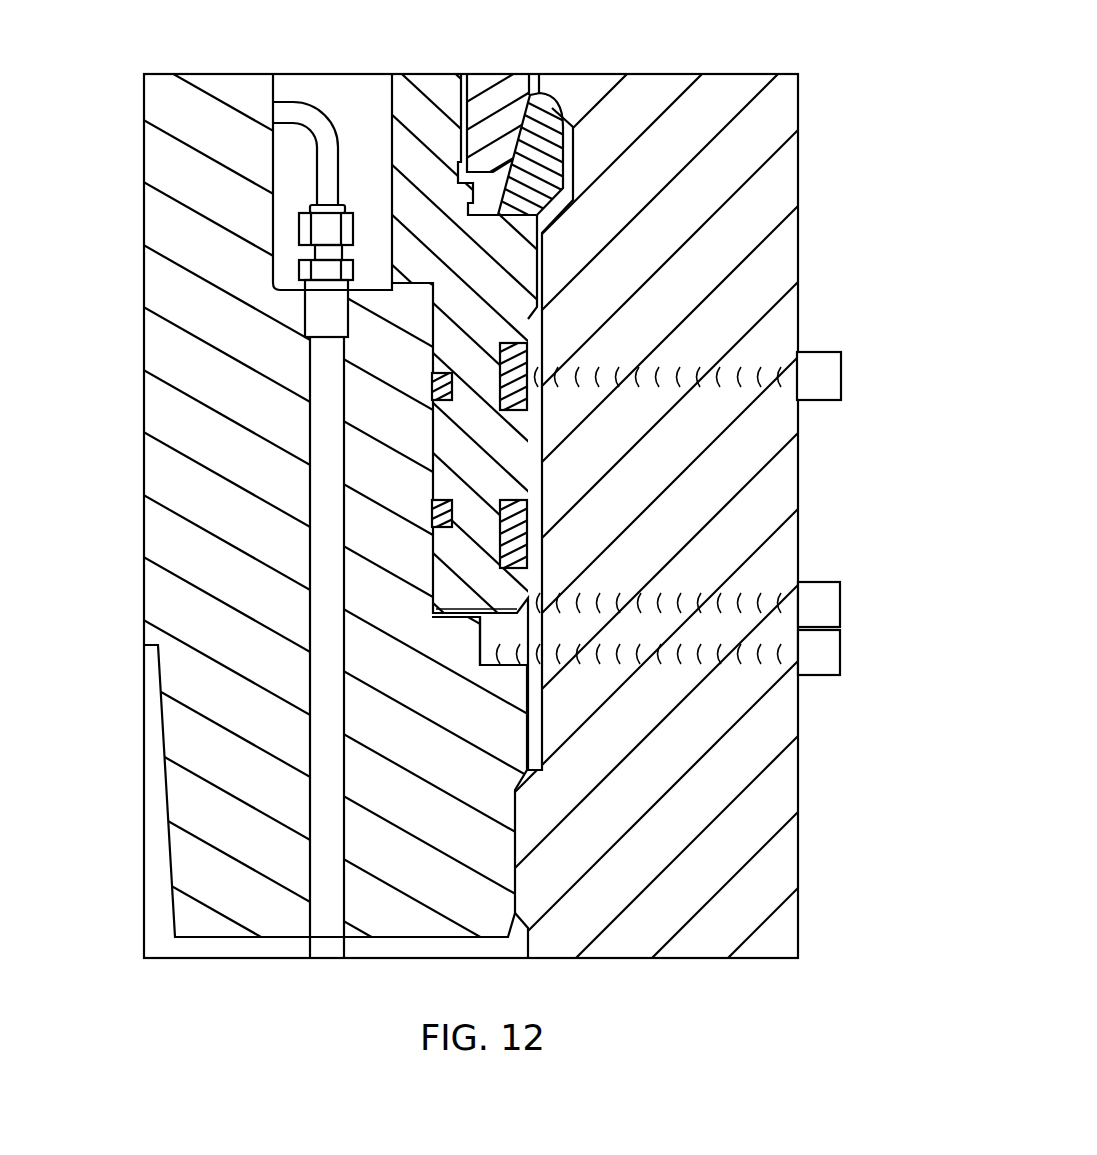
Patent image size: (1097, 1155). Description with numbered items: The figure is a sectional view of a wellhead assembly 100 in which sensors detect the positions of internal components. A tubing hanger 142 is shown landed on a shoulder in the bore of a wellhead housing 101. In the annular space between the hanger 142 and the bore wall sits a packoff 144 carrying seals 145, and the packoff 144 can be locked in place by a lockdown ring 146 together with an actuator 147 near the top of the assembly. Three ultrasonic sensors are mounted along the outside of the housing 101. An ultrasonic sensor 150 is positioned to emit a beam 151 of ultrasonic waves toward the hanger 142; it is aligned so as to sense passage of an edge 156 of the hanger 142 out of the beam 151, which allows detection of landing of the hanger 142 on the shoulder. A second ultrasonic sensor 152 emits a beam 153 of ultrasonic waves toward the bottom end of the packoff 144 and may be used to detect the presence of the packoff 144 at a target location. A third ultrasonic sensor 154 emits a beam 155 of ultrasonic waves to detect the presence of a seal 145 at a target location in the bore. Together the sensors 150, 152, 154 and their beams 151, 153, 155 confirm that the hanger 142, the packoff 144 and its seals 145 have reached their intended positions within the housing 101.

The sensor system 100 is at (840, 120).
The wellhead housing 101 is at (752, 835).
The tubing hanger 142 is at (165, 495).
The packoff 144 is at (440, 543).
The seals 145 is at (430, 372).
The lockdown ring 146 is at (550, 118).
The actuator 147 is at (497, 73).
The ultrasonic sensor 150 is at (842, 653).
The beam 151 is at (757, 653).
The ultrasonic sensor 152 is at (842, 602).
The beam 153 is at (757, 607).
The ultrasonic sensor 154 is at (843, 378).
The beam 155 is at (758, 374).
The edge 156 is at (510, 662).